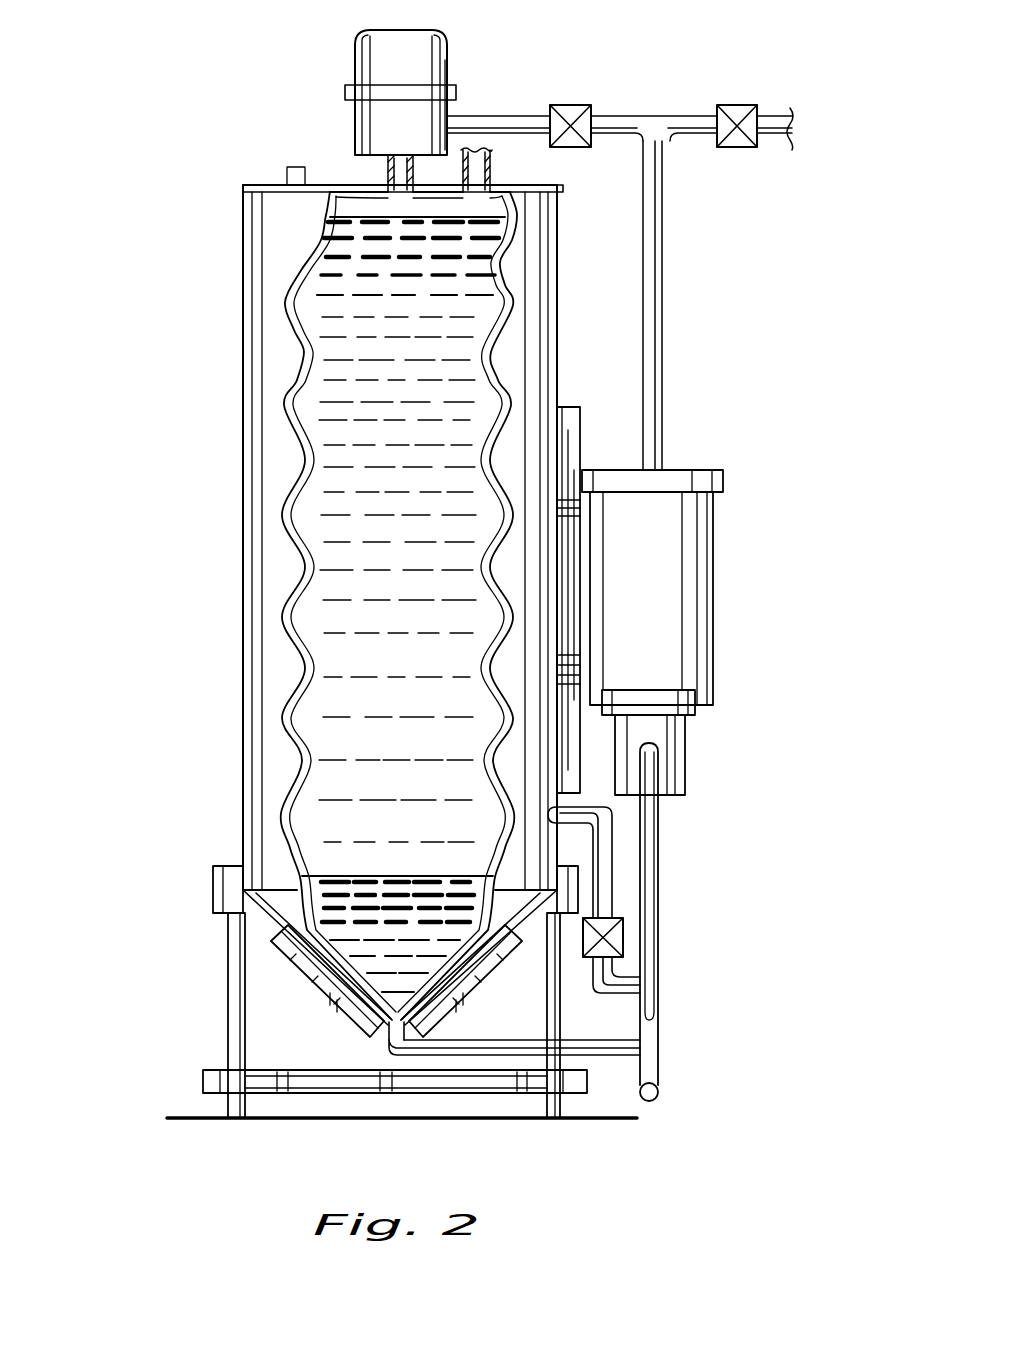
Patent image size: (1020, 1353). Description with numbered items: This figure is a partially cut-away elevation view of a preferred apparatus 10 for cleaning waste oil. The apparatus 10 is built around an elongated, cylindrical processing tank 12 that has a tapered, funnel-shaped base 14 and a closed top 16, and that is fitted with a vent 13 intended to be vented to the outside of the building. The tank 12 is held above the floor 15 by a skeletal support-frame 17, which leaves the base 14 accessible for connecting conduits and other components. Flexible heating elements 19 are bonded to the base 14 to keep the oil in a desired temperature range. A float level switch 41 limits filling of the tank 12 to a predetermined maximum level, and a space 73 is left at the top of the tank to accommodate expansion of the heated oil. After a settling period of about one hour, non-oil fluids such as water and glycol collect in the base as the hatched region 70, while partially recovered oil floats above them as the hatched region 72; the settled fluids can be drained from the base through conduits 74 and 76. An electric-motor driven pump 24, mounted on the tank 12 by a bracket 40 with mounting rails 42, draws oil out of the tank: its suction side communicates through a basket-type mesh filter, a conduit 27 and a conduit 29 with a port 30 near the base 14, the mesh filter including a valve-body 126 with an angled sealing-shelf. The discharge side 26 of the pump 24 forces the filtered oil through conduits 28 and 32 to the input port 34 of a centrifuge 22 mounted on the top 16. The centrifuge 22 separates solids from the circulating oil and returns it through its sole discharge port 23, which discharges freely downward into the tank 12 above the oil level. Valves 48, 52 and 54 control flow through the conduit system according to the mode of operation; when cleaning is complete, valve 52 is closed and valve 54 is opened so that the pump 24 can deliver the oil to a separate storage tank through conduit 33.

The apparatus 10 is at (196, 587).
The processing tank 12 is at (236, 435).
The vent 13 is at (484, 165).
The base 14 is at (275, 910).
The floor 15 is at (388, 1120).
The top 16 is at (268, 185).
The skeletal support-frame 17 is at (220, 1028).
The heating elements 19 is at (345, 1010).
The centrifuge 22 is at (454, 52).
The discharge port 23 is at (378, 176).
The pump 24 is at (727, 552).
The discharge side 26 is at (700, 748).
The conduit 27 is at (651, 851).
The conduit 28 is at (663, 336).
The conduit 29 is at (603, 876).
The port 30 is at (560, 815).
The conduit 32 is at (628, 118).
The conduit 33 is at (692, 128).
The input port 34 is at (480, 122).
The bracket 40 is at (589, 410).
The float level switch 41 is at (296, 167).
The mounting rails 42 is at (600, 432).
The valve 48 is at (620, 940).
The valve 52 is at (573, 104).
The valve 54 is at (737, 106).
The hatched region 70 is at (385, 975).
The hatched region 72 is at (358, 495).
The space 73 is at (356, 212).
The conduit 74 is at (603, 1052).
The conduit 76 is at (658, 1092).
The valve-body 126 is at (678, 770).